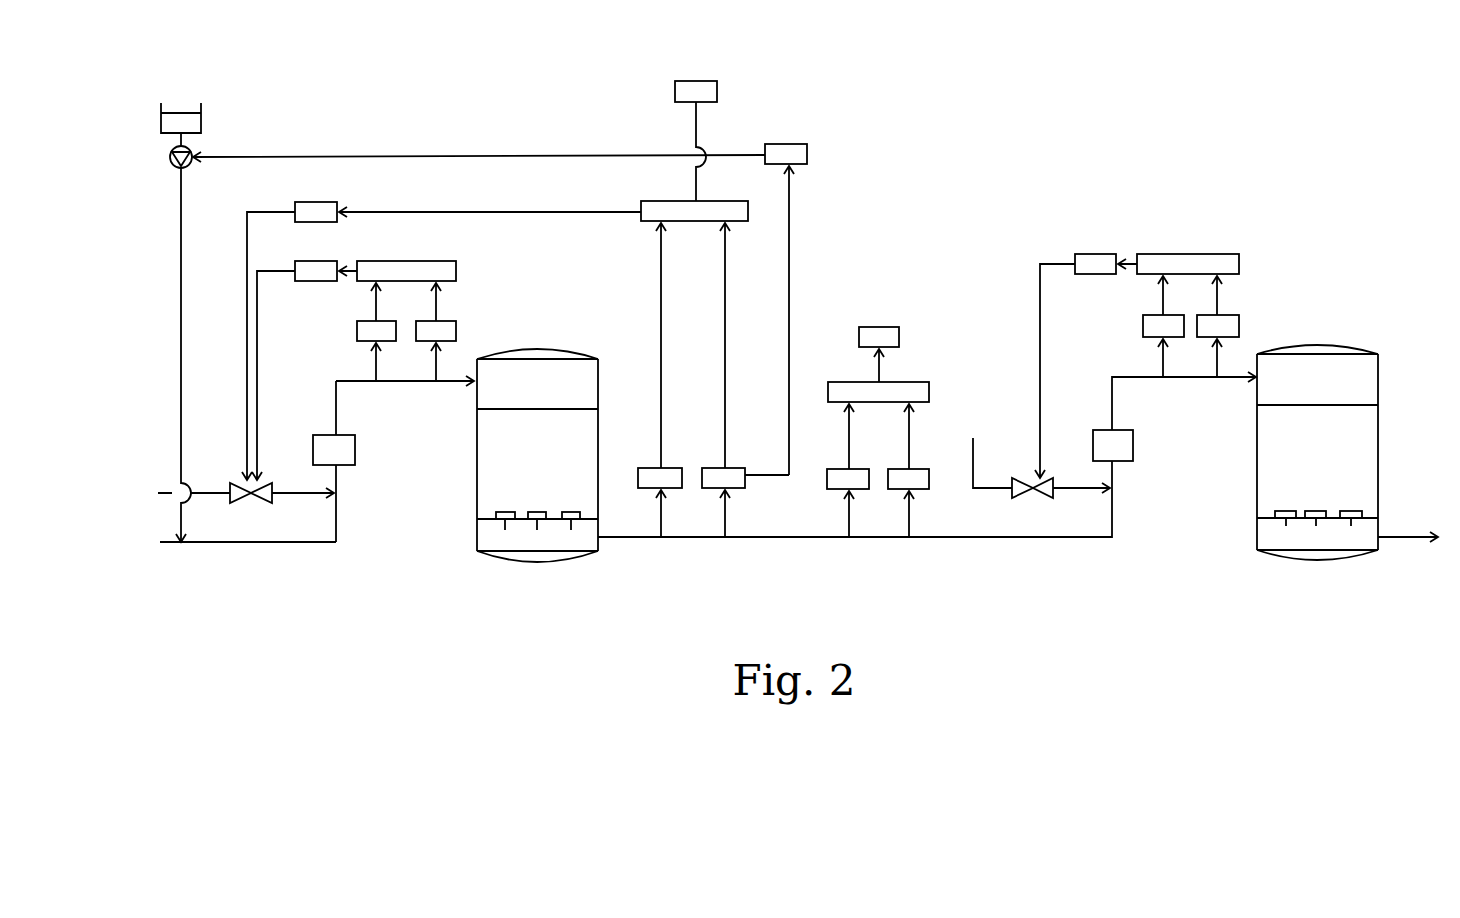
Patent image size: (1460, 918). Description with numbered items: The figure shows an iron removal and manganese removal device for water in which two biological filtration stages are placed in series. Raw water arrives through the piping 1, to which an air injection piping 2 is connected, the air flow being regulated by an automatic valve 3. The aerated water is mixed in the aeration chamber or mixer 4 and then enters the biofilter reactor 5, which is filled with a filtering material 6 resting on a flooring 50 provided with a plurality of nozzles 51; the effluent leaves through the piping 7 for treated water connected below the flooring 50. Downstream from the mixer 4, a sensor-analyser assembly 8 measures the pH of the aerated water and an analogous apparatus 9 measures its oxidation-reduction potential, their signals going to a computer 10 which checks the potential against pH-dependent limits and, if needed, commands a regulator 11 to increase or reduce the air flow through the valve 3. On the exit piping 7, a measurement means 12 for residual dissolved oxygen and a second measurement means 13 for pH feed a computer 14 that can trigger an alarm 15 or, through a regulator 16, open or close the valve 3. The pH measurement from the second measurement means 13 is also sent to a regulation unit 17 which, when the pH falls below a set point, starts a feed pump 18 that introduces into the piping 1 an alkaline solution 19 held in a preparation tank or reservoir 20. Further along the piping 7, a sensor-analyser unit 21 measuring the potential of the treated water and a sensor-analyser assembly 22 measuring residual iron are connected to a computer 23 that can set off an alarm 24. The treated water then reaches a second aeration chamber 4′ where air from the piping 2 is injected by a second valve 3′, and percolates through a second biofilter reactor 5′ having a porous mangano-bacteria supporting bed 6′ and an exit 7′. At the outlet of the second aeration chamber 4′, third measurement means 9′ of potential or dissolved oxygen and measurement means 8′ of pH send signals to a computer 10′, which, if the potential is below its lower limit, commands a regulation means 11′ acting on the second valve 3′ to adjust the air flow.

The piping 1 is at (237, 361).
The air injection piping 2 is at (576, 461).
The automatic valve 3 is at (243, 498).
The second valve 3′ is at (1025, 490).
The aeration chamber or mixer 4 is at (355, 453).
The second aeration chamber 4′ is at (1133, 443).
The biofilter reactor 5 is at (472, 480).
The second biofilter reactor 5′ is at (1257, 475).
The filtering material 6 is at (588, 478).
The porous mangano-bacteria supporting bed 6′ is at (1368, 475).
The piping for treated water 7 is at (932, 540).
The exit 7′ is at (1418, 537).
The sensor-analyser assembly 8 is at (354, 325).
The measurement means of pH 8′ is at (1143, 325).
The sensor-analyser apparatus 9 is at (458, 328).
The third measurement means 9′ is at (1241, 323).
The computer 10 is at (373, 259).
The computer 10′ is at (1153, 253).
The regulator 11 is at (307, 261).
The regulation means 11′ is at (1083, 253).
The measurement means for residual dissolved oxygen 12 is at (650, 470).
The second measurement means for pH 13 is at (740, 483).
The calculation unit or computer 14 is at (662, 201).
The alarm 15 is at (678, 103).
The regulator 16 is at (323, 202).
The regulation unit 17 is at (790, 144).
The feed pump 18 is at (188, 163).
The alkaline solution 19 is at (177, 120).
The preparation tank or reservoir 20 is at (198, 128).
The sensor-analyser unit 21 is at (832, 472).
The sensor-analyser assembly 22 is at (917, 472).
The computer 23 is at (910, 382).
The alarm 24 is at (885, 330).
The flooring 50 is at (473, 527).
The nozzles 51 is at (540, 510).